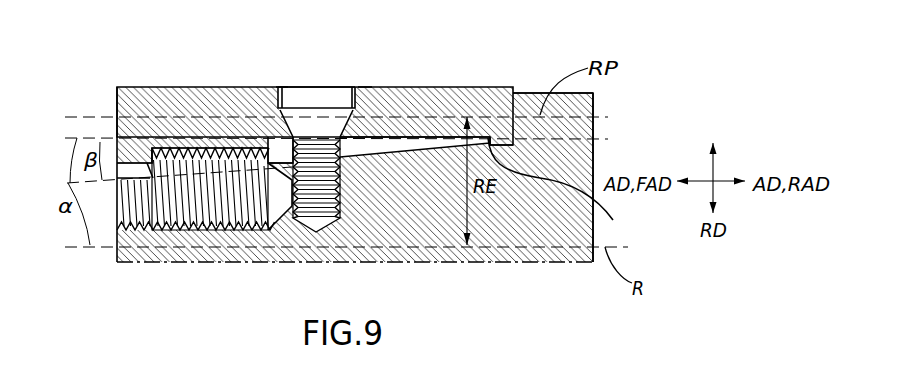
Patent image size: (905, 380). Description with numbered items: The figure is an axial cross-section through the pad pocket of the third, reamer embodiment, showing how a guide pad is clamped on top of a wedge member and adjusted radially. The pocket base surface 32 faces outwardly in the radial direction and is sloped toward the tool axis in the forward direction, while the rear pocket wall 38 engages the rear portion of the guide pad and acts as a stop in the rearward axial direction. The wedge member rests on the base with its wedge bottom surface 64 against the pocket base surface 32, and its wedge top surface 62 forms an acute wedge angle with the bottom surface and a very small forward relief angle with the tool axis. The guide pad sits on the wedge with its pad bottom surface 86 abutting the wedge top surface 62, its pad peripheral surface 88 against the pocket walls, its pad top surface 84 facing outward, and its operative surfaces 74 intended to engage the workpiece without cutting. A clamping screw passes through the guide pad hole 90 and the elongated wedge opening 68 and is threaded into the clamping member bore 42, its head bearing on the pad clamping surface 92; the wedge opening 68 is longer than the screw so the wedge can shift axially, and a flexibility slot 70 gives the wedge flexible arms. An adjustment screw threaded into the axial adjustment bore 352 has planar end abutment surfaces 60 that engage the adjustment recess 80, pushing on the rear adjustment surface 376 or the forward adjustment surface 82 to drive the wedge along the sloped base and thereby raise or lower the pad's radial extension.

The pocket base surface 32 is at (427, 147).
The rear pocket wall 38 is at (514, 107).
The clamping member bore 42 is at (318, 230).
The end abutment surfaces 60 is at (153, 163).
The wedge top surface 62 is at (365, 145).
The wedge bottom surface 64 is at (388, 158).
The wedge opening 68 is at (283, 150).
The flexibility slot 70 is at (420, 143).
The operative surfaces 74 is at (118, 84).
The adjustment recess 80 is at (188, 220).
The forward adjustment surface 82 is at (166, 150).
The pad top surface 84 is at (364, 78).
The pad bottom surface 86 is at (561, 190).
The pad peripheral surface 88 is at (117, 100).
The guide pad hole 90 is at (282, 80).
The pad clamping surface 92 is at (340, 110).
The adjustment bore 352 is at (263, 212).
The rear adjustment surface 376 is at (197, 157).